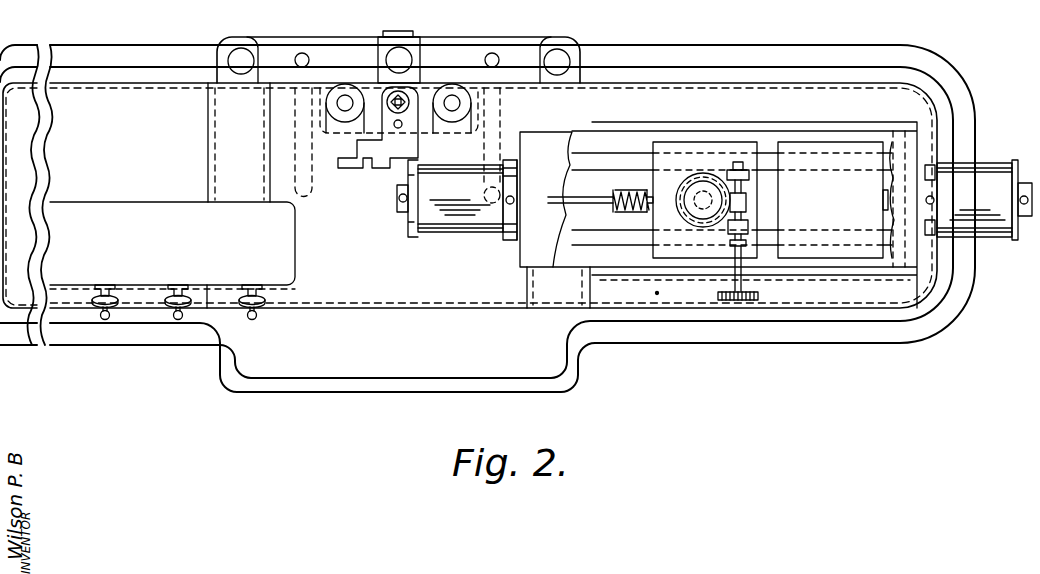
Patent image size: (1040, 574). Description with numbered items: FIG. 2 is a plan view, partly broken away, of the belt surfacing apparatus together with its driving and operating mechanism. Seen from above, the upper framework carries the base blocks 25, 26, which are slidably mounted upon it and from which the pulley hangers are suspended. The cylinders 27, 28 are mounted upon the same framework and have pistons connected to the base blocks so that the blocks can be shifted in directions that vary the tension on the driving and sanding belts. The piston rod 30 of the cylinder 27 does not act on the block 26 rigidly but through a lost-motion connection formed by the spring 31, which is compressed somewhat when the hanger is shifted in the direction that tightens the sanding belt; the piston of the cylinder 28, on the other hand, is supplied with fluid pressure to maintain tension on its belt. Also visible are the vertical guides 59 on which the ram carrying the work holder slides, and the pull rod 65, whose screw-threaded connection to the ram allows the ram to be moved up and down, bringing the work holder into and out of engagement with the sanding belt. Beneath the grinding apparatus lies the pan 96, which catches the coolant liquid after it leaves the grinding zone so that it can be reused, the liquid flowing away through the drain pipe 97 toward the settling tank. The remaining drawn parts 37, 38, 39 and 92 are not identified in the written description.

The pan 96 is at (852, 49).
The drain pipe 97 is at (494, 63).
The panel 92 is at (294, 65).
The vertical guides 59 is at (337, 104).
The pull rod 65 is at (405, 95).
The cylinder 27 is at (465, 212).
The piston rod 30 is at (582, 192).
The spring 31 is at (618, 210).
The base block 26 is at (725, 143).
The gear 37 is at (702, 173).
The worm shaft 38 is at (733, 215).
The gear 39 is at (737, 301).
The base block 25 is at (801, 150).
The cylinder 28 is at (989, 181).